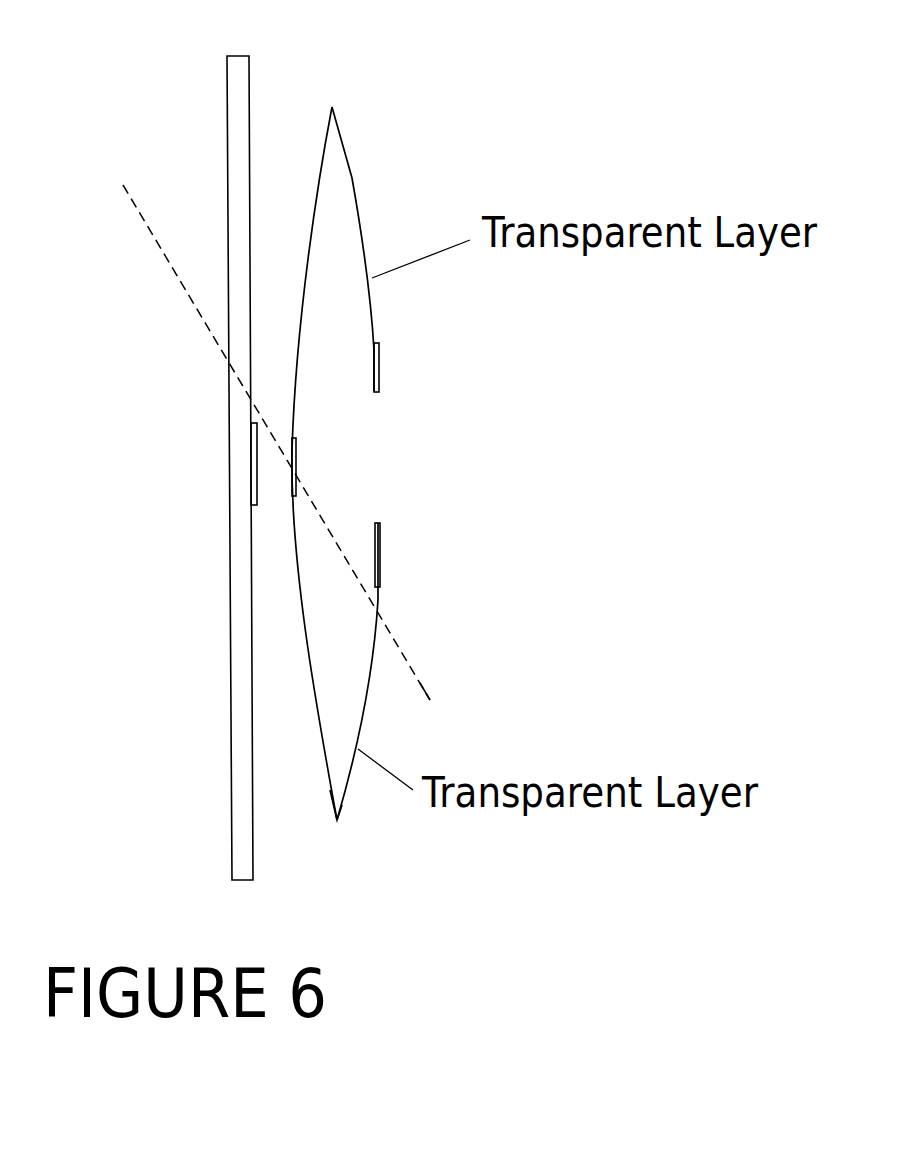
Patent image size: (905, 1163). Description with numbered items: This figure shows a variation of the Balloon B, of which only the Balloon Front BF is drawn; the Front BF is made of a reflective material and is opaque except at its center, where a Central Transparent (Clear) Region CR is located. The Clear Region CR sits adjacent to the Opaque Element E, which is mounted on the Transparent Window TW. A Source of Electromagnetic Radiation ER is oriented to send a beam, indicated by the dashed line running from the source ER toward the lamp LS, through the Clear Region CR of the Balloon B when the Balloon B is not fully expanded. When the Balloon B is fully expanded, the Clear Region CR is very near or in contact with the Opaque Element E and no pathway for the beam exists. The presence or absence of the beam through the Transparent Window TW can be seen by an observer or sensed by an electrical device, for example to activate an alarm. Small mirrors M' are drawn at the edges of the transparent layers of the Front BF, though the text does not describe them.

The transparent window TW is at (230, 565).
The opaque element E is at (253, 475).
The source of electromagnetic radiation ER is at (153, 237).
The lamp LS is at (451, 715).
The balloon front BF is at (312, 213).
The mirror M' is at (441, 455).
The central transparent (clear) region CR is at (296, 448).
The balloon B is at (339, 769).